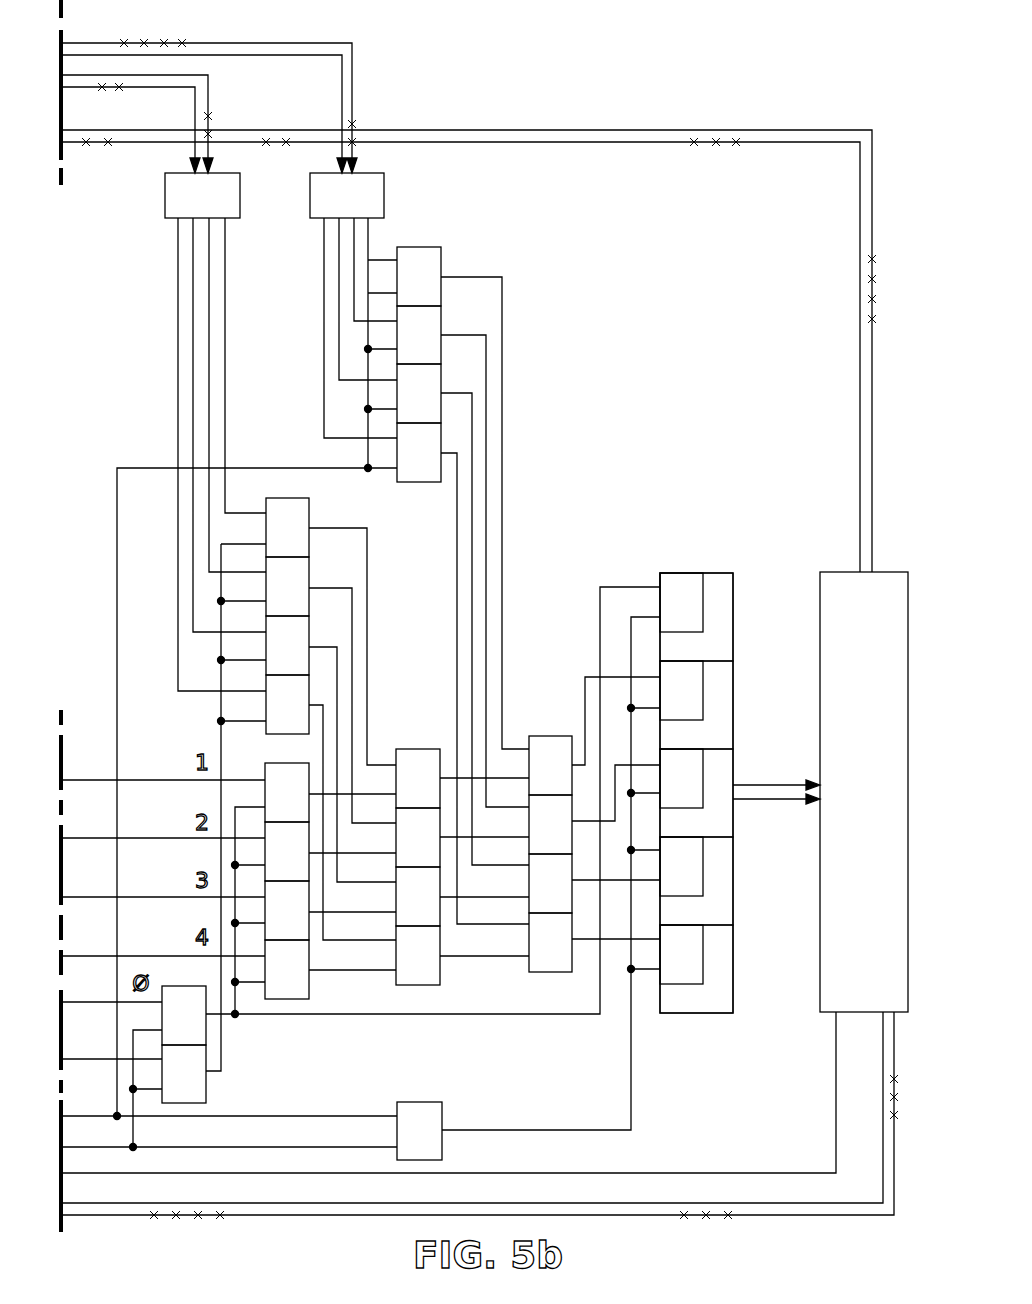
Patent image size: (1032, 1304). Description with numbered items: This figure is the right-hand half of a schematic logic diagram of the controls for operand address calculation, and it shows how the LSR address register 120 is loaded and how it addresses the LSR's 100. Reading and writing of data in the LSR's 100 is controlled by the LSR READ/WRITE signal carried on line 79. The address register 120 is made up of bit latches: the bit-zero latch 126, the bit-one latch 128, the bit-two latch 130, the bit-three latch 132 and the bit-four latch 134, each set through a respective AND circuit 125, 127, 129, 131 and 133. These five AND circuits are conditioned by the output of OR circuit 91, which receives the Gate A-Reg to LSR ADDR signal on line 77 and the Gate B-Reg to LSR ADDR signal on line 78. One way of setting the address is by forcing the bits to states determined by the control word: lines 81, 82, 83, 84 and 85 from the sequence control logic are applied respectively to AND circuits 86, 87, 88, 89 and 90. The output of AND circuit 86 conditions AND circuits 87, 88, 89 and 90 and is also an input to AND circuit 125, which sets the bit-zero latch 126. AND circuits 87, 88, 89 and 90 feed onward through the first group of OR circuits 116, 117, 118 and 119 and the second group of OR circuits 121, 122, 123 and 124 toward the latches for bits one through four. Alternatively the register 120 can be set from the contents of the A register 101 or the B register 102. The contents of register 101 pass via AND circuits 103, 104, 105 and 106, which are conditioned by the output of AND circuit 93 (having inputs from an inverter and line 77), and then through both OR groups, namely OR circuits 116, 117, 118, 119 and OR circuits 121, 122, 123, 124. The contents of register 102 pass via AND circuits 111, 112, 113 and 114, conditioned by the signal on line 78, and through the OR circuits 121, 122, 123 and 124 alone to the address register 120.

The line 77 is at (268, 1147).
The line 78 is at (117, 468).
The line 79 is at (685, 1172).
The line 81 is at (81, 1000).
The line 82 is at (85, 778).
The line 83 is at (85, 836).
The line 84 is at (85, 895).
The line 85 is at (85, 954).
The AND circuit 86 is at (172, 1038).
The AND circuit 87 is at (275, 815).
The AND circuit 88 is at (275, 874).
The AND circuit 89 is at (275, 933).
The AND circuit 90 is at (275, 992).
The OR circuit 91 is at (408, 1154).
The AND circuit 93 is at (172, 1097).
The LSR's 100 is at (848, 921).
The register 101 is at (240, 195).
The register 102 is at (384, 195).
The AND circuit 103 is at (272, 550).
The AND circuit 104 is at (272, 609).
The AND circuit 105 is at (272, 668).
The AND circuit 106 is at (272, 727).
The AND circuit 111 is at (406, 299).
The AND circuit 112 is at (405, 358).
The AND circuit 113 is at (405, 416).
The AND circuit 114 is at (405, 475).
The OR circuit 116 is at (405, 801).
The OR circuit 117 is at (405, 860).
The OR circuit 118 is at (405, 919).
The OR circuit 119 is at (405, 978).
The LSR address register 120 is at (694, 1020).
The OR circuit 121 is at (537, 788).
The OR circuit 122 is at (537, 847).
The OR circuit 123 is at (537, 906).
The OR circuit 124 is at (537, 965).
The AND circuit 125 is at (667, 625).
The bit 0 latch 126 is at (733, 597).
The AND circuit 127 is at (667, 713).
The bit 1 latch 128 is at (733, 684).
The AND circuit 129 is at (667, 801).
The bit 2 latch 130 is at (733, 760).
The AND circuit 131 is at (667, 889).
The bit 3 latch 132 is at (733, 862).
The AND circuit 133 is at (667, 977).
The bit 4 latch 134 is at (733, 946).